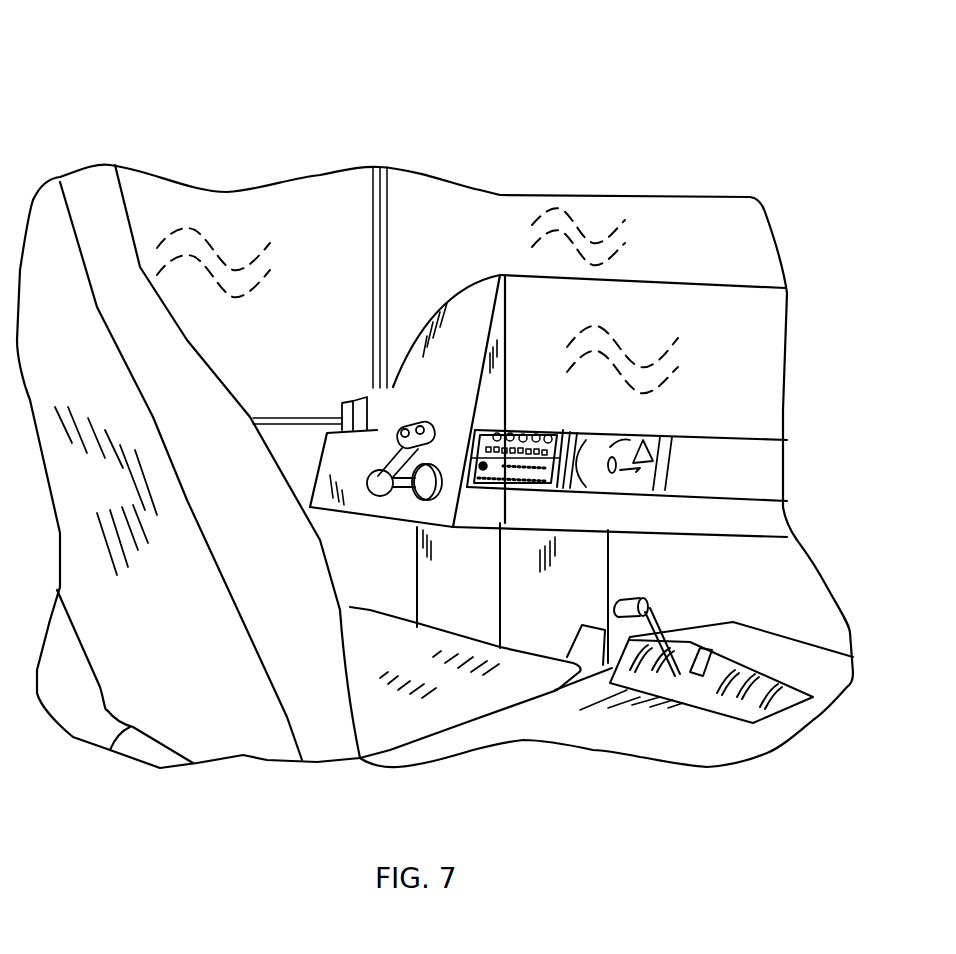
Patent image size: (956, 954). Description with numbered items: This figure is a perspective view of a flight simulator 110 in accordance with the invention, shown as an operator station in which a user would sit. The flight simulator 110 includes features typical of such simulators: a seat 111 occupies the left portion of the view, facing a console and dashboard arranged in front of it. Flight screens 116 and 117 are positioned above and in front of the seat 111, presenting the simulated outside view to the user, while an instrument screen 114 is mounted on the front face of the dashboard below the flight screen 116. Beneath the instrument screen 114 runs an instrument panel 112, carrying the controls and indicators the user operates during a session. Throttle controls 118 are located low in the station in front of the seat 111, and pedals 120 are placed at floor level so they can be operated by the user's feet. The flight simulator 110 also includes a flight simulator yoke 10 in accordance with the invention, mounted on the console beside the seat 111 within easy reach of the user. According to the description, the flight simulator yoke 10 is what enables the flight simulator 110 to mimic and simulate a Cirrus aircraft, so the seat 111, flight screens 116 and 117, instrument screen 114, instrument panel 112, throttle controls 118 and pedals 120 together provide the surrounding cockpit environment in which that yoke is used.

The flight simulator 110 is at (252, 92).
The seat 111 is at (110, 205).
The flight screen 117 is at (307, 210).
The flight simulator yoke 10 is at (380, 430).
The flight screen 116 is at (697, 223).
The instrument screen 114 is at (760, 333).
The instrument panel 112 is at (670, 437).
The throttle controls 118 is at (748, 708).
The pedals 120 is at (590, 648).